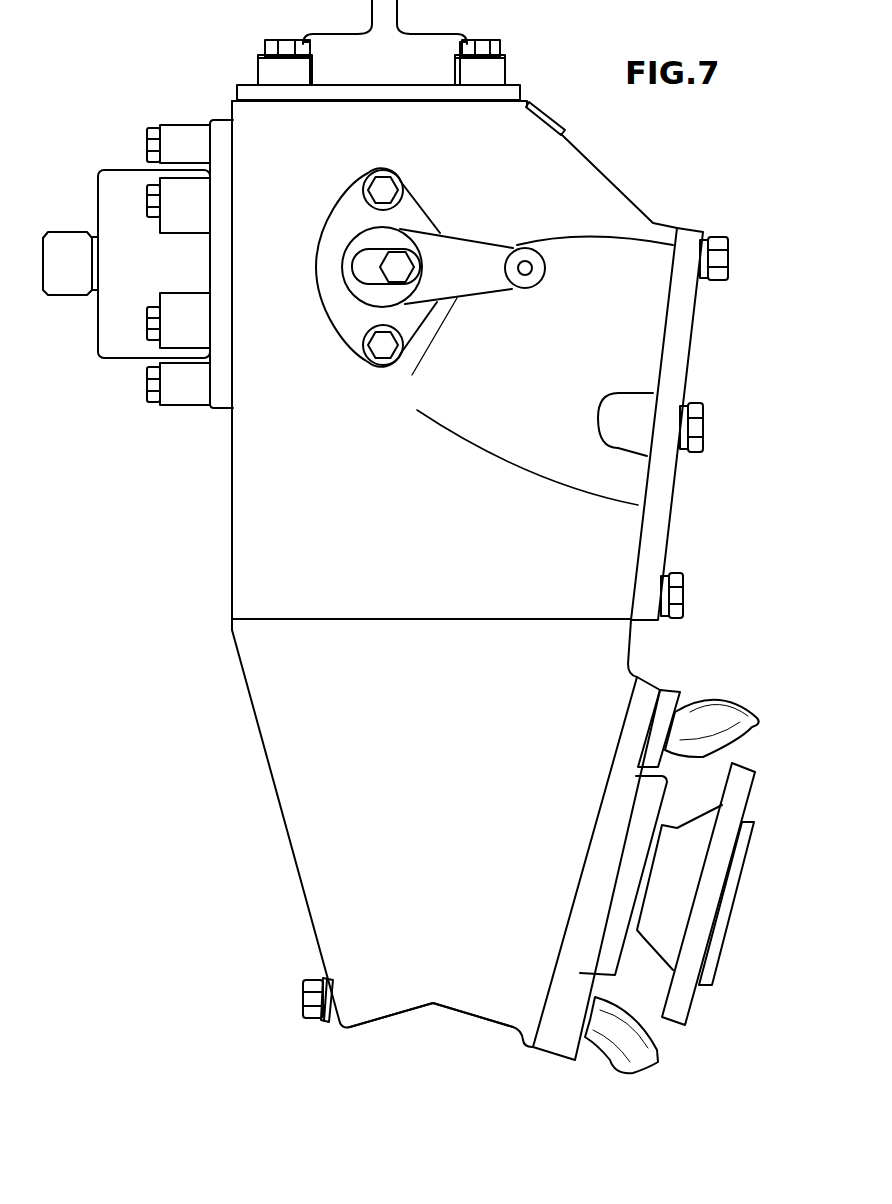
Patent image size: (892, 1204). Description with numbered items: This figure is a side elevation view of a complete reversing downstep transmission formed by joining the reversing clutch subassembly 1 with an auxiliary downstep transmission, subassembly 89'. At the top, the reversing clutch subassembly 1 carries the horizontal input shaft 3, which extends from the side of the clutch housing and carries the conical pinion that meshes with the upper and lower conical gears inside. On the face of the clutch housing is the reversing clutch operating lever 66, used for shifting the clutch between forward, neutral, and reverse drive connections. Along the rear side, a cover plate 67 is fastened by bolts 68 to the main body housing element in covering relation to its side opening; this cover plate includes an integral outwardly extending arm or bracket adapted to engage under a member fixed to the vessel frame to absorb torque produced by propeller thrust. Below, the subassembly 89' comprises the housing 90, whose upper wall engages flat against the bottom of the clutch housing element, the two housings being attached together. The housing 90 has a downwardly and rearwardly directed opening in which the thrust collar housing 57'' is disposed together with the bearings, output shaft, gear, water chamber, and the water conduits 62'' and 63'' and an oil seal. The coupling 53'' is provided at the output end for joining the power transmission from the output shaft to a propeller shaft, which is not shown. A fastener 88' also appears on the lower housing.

The reversing clutch subassembly 1 is at (585, 158).
The horizontal input shaft 3 is at (70, 232).
The reversing clutch operating lever 66 is at (483, 288).
The cover plate 67 is at (692, 348).
The bolts 68 is at (729, 258).
The housing 90 is at (275, 790).
The bolt 88' is at (296, 1017).
The subassembly 89' is at (431, 1032).
The thrust collar housing 57'' is at (608, 847).
The water conduit 62'' is at (712, 701).
The water conduit 63'' is at (605, 1057).
The coupling 53'' is at (724, 894).